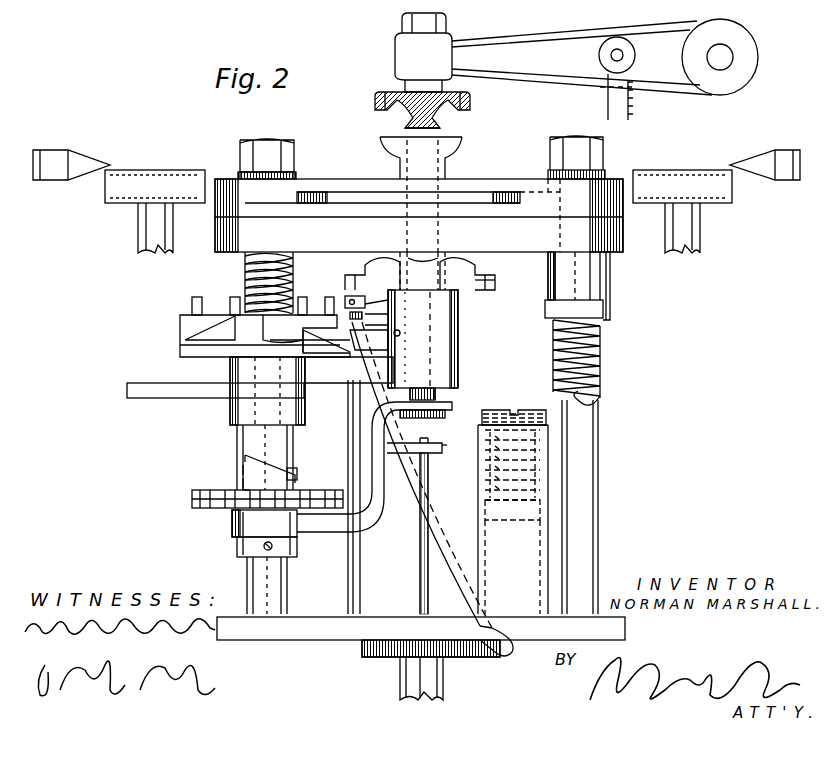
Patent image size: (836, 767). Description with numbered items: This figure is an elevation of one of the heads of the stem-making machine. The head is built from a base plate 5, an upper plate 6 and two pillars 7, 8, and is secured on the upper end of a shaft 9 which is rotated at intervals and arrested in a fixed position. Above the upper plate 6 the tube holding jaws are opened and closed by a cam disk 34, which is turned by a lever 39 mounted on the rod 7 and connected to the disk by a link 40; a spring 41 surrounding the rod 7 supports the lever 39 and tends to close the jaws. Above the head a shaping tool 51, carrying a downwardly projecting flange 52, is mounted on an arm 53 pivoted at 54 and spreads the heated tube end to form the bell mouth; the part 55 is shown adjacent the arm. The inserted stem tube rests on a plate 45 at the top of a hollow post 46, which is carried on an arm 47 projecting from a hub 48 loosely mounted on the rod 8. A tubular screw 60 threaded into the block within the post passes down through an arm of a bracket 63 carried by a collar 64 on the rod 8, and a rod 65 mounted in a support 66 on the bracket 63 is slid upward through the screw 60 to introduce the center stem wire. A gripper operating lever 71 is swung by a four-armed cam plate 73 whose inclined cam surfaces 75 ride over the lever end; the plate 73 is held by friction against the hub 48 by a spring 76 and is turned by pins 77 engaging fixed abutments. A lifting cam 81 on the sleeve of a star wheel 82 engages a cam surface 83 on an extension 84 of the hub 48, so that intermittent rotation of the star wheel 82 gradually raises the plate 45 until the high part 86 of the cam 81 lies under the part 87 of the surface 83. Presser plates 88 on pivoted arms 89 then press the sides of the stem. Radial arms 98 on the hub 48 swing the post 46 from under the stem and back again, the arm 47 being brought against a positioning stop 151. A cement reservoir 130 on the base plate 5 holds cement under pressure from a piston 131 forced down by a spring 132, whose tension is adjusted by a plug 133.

The base plate 5 is at (292, 642).
The upper plate 6 is at (620, 238).
The pillar 7 is at (600, 480).
The pillar 8 is at (248, 573).
The shaft 9 is at (444, 686).
The cam disk 34 is at (468, 190).
The lever 39 is at (606, 280).
The link 40 is at (526, 190).
The spring 41 is at (598, 356).
The plate 45 is at (445, 285).
The post 46 is at (460, 327).
The arm 47 is at (330, 383).
The hub 48 is at (230, 372).
The shaping tool 51 is at (442, 119).
The flange 52 is at (378, 104).
The arm 53 is at (553, 54).
The pivot 54 is at (726, 50).
The link 55 is at (630, 107).
The tubular screw 60 is at (438, 395).
The bracket 63 is at (383, 433).
The collar 64 is at (232, 527).
The rod 65 is at (428, 488).
The support arm 66 is at (440, 450).
The gripper operating lever 71 is at (368, 323).
The cam plate 73 is at (190, 349).
The cam surface 75 is at (188, 337).
The spring 76 is at (246, 284).
The pins 77 is at (328, 298).
The cam 81 is at (298, 476).
The star wheel 82 is at (192, 499).
The cam surface 83 is at (285, 470).
The extension 84 is at (238, 444).
The high part 86 is at (248, 462).
The part of cam surface 87 is at (243, 484).
The presser plates 88 is at (490, 283).
The arms 89 is at (478, 268).
The arms 98 is at (140, 398).
The reservoir 130 is at (500, 558).
The piston 131 is at (498, 520).
The spring 132 is at (490, 470).
The plug 133 is at (500, 410).
The positioning stop 151 is at (360, 558).